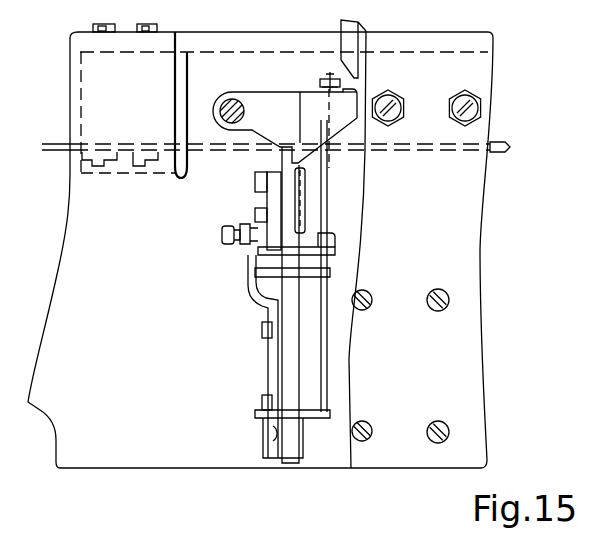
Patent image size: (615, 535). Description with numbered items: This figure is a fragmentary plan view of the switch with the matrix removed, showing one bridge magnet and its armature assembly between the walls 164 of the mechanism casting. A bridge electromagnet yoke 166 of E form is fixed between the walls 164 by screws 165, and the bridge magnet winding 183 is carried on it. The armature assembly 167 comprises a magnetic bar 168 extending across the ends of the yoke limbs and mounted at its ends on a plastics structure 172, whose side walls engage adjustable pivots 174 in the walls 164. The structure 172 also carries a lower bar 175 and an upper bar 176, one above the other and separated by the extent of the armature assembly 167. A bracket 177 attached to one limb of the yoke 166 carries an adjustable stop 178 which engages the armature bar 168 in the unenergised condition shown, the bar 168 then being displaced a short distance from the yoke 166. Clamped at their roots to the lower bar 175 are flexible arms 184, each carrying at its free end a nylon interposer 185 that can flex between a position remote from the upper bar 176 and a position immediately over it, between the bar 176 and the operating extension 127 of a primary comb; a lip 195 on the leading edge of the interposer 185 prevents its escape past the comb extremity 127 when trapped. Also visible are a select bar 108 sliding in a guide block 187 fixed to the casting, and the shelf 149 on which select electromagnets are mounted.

The select bars 108 is at (58, 147).
The operating extension 127 is at (348, 36).
The shelf 149 is at (78, 173).
The walls 164 is at (468, 238).
The screws 165 is at (434, 292).
The bridge electromagnet yoke 166 is at (293, 370).
The armature assembly 167 is at (252, 186).
The magnetic bar 168 is at (272, 198).
The plastics structure 172 is at (266, 108).
The adjustable pivots 174 is at (229, 107).
The lower bar 175 is at (337, 242).
The upper bar 176 is at (357, 94).
The bracket 177 is at (250, 262).
The adjustable stop 178 is at (222, 232).
The bridge magnet winding 183 is at (313, 327).
The arms 184 is at (330, 164).
The interposer 185 is at (319, 82).
The guide block 187 is at (80, 82).
The lip 195 is at (334, 79).